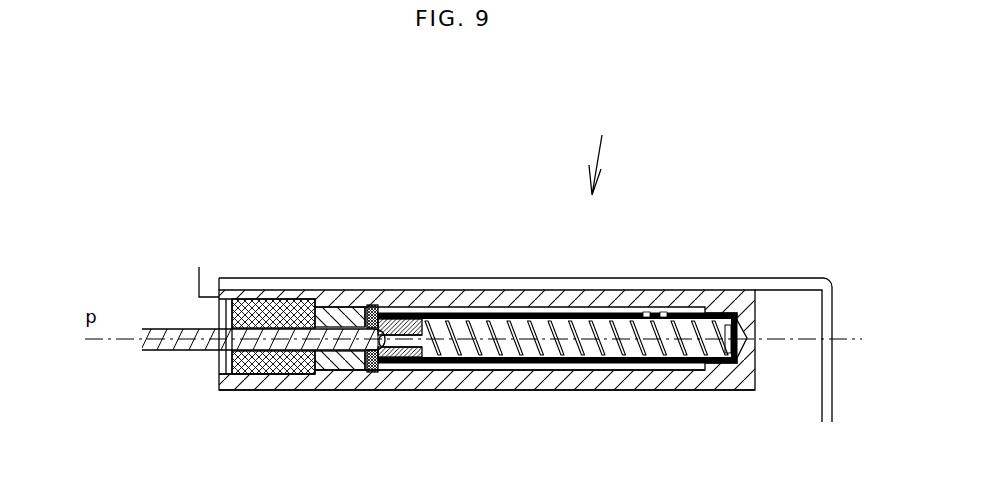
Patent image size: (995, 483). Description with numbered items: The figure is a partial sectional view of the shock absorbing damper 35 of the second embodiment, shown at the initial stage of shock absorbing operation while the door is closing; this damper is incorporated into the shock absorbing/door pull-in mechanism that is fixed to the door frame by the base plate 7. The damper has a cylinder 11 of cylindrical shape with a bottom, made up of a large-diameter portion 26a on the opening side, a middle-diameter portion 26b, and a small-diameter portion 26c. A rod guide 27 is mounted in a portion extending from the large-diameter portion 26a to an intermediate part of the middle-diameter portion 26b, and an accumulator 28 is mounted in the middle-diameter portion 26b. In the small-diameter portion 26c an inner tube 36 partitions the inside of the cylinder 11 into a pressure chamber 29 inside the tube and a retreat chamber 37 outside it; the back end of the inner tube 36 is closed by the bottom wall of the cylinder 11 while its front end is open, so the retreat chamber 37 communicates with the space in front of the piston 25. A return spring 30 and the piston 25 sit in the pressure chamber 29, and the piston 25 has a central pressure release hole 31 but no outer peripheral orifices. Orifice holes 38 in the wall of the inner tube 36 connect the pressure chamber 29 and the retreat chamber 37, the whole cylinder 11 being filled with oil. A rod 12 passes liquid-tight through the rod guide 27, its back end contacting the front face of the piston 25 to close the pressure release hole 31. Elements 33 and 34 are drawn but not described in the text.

The base plate 7 is at (718, 278).
The cylinder 11 is at (607, 303).
The rod 12 is at (153, 328).
The piston 25 is at (405, 320).
The large-diameter portion 26a is at (265, 375).
The middle-diameter portion 26b is at (353, 367).
The small-diameter portion 26c is at (503, 347).
The rod guide 27 is at (253, 307).
The accumulator 28 is at (330, 306).
The pressure chamber 29 is at (477, 330).
The return spring 30 is at (542, 328).
The pressure release hole 31 is at (407, 340).
The seal member 33 is at (375, 305).
The gap 34 is at (340, 305).
The shock absorbing damper 35 is at (593, 124).
The inner tube 36 is at (522, 315).
The retreat chamber 37 is at (623, 367).
The orifice holes 38 is at (662, 316).